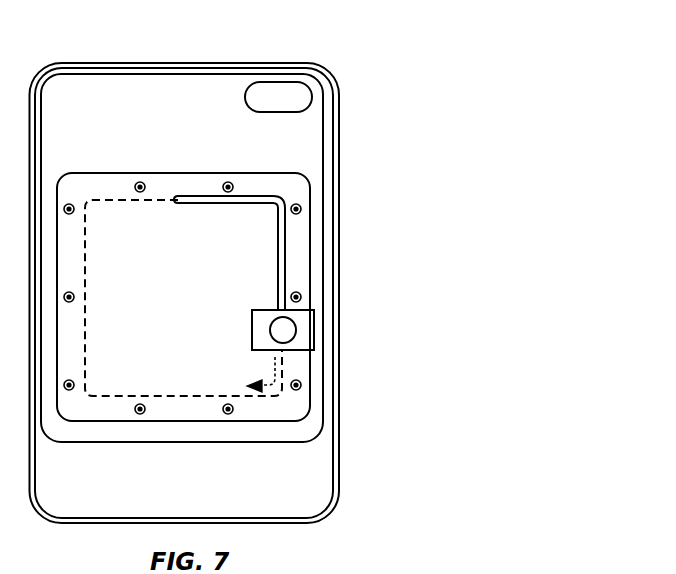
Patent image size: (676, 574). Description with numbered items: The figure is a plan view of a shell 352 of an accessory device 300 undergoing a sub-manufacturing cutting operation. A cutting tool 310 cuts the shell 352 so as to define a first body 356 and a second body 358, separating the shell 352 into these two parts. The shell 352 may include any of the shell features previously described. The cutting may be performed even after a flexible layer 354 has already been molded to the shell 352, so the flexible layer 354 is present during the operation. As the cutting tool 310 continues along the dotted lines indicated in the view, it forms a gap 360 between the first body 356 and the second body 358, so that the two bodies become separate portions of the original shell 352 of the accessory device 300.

The accessory device 300 is at (500, 66).
The cutting tool 310 is at (314, 322).
The shell 352 is at (95, 62).
The flexible layer 354 is at (267, 62).
The first body 356 is at (183, 297).
The second body 358 is at (182, 258).
The gap 360 is at (292, 232).